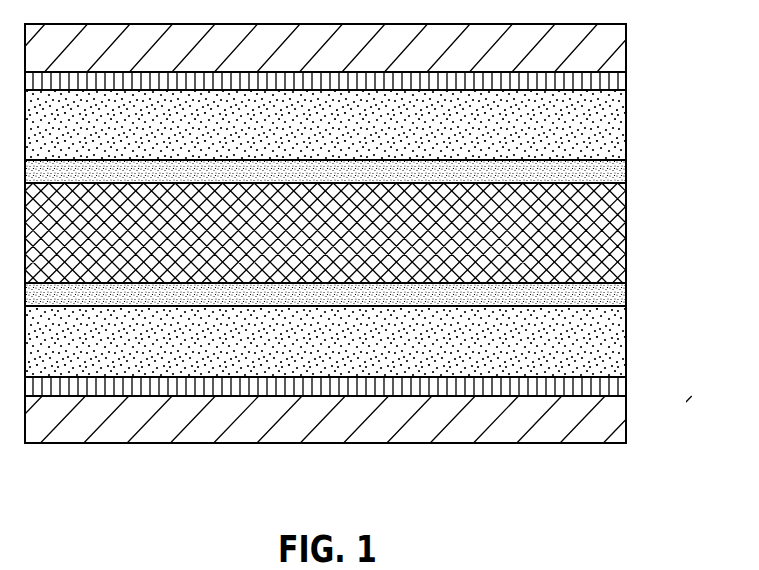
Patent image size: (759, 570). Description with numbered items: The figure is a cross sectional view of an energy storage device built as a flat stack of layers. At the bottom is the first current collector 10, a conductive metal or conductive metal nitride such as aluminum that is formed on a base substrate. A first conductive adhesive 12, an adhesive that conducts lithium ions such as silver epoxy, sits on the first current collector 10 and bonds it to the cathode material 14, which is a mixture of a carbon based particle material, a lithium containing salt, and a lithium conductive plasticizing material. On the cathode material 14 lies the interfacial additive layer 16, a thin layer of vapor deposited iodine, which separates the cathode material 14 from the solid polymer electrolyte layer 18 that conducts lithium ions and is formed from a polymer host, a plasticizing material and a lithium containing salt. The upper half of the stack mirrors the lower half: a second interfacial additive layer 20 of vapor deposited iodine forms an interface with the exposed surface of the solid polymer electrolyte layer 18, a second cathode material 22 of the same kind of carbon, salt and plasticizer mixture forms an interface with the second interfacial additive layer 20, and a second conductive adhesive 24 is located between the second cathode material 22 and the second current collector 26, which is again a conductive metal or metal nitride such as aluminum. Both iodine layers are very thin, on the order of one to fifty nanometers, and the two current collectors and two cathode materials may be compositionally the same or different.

The first current collector 10 is at (312, 432).
The first conductive adhesive 12 is at (616, 387).
The cathode material 14 is at (312, 356).
The interfacial additive layer 16 is at (616, 294).
The solid polymer electrolyte layer 18 is at (312, 248).
The second interfacial additive layer 20 is at (610, 172).
The second cathode material 22 is at (312, 138).
The second conductive adhesive 24 is at (612, 82).
The second current collector 26 is at (312, 63).